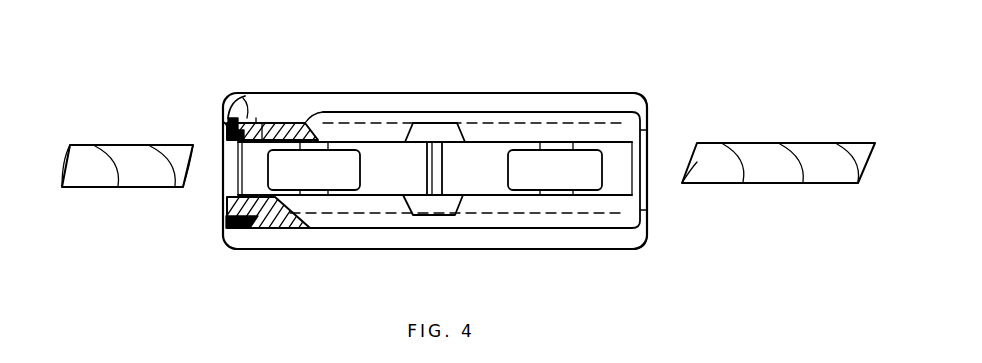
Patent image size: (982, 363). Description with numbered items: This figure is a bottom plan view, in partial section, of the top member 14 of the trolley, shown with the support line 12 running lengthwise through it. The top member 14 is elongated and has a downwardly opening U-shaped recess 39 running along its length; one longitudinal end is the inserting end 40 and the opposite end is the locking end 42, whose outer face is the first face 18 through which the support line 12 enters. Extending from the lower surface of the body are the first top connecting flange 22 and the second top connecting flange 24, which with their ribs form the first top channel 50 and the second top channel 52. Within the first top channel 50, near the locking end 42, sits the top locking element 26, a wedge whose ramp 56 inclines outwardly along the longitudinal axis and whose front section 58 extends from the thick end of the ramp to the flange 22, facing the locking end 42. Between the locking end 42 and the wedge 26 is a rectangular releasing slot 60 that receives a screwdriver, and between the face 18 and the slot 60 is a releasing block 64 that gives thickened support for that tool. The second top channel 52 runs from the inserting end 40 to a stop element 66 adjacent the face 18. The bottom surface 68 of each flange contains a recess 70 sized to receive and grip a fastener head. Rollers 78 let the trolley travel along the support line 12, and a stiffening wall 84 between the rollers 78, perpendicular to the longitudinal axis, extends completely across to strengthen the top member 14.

The support line 12 is at (795, 135).
The top member 14 is at (593, 70).
The first face 18 is at (223, 210).
The first top connecting flange 22 is at (300, 122).
The second top connecting flange 24 is at (272, 212).
The top locking element 26 is at (258, 113).
The U-shaped recess 39 is at (398, 158).
The inserting end 40 is at (660, 137).
The locking end 42 is at (223, 188).
The first top channel 50 is at (645, 108).
The second top channel 52 is at (641, 248).
The ramp 56 is at (262, 118).
The front section 58 is at (243, 113).
The releasing slot 60 is at (238, 116).
The releasing block 64 is at (222, 128).
The stop element 66 is at (226, 229).
The bottom surface 68 is at (431, 113).
The recess 70 is at (472, 136).
The rollers 78 is at (323, 180).
The stiffening wall 84 is at (443, 167).